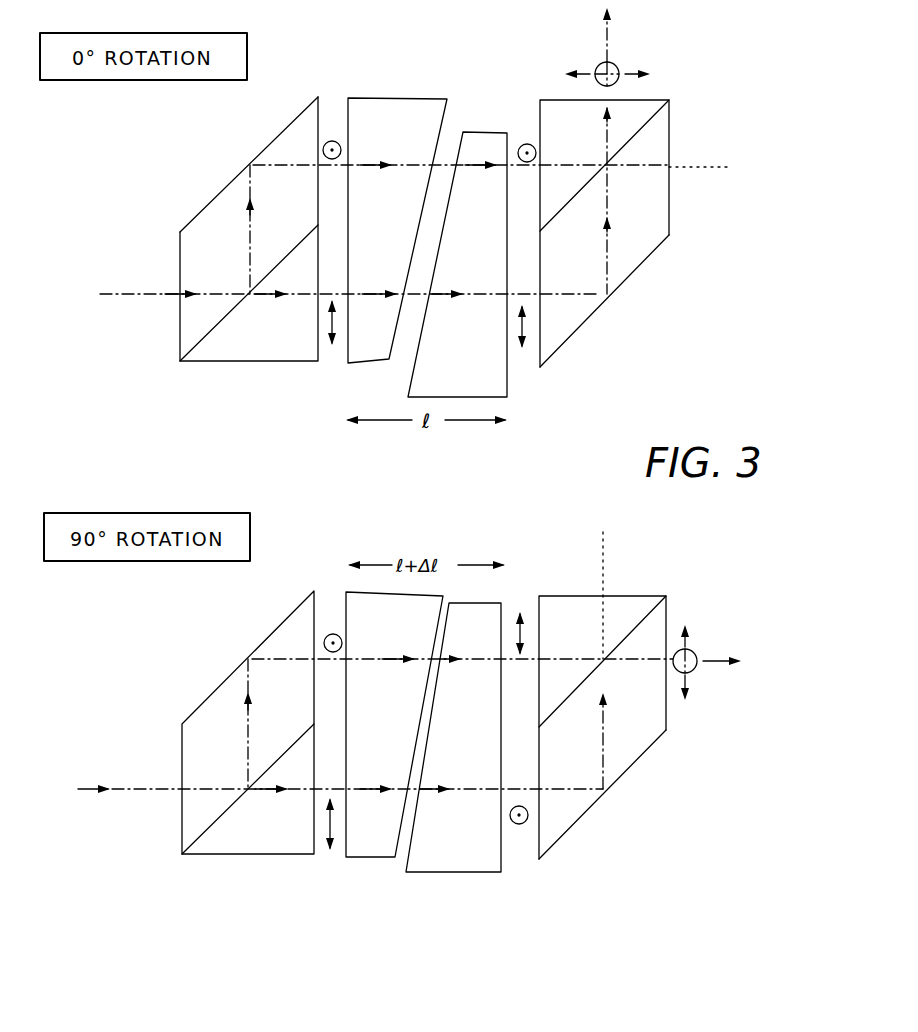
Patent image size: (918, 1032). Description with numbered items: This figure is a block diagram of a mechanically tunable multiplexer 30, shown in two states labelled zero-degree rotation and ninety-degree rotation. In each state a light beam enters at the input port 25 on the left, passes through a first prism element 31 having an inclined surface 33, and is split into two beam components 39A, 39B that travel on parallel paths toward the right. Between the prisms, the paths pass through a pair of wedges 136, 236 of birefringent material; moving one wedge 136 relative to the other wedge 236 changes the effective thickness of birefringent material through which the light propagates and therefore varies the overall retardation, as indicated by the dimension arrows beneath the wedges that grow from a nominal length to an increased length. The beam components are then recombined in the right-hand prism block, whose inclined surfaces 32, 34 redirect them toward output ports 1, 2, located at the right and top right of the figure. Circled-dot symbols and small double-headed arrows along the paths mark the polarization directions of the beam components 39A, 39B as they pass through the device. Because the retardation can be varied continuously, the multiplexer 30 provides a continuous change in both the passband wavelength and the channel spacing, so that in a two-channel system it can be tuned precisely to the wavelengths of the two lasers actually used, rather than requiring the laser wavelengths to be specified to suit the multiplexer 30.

The output port 1 is at (612, 44).
The output port 2 is at (680, 167).
The input port 25 is at (174, 298).
The mechanically tunable multiplexer 30 is at (640, 469).
The polarizing beam splitter prism 31 is at (227, 247).
The reflecting surface of output prism 32 is at (657, 116).
The reflecting surface of input prism 33 is at (289, 126).
The lower reflecting surface of output prism 34 is at (636, 270).
The first polarized beam component 39A is at (258, 218).
The second polarized beam component 39B is at (358, 292).
The wedge 136 is at (402, 96).
The wedge 236 is at (489, 131).